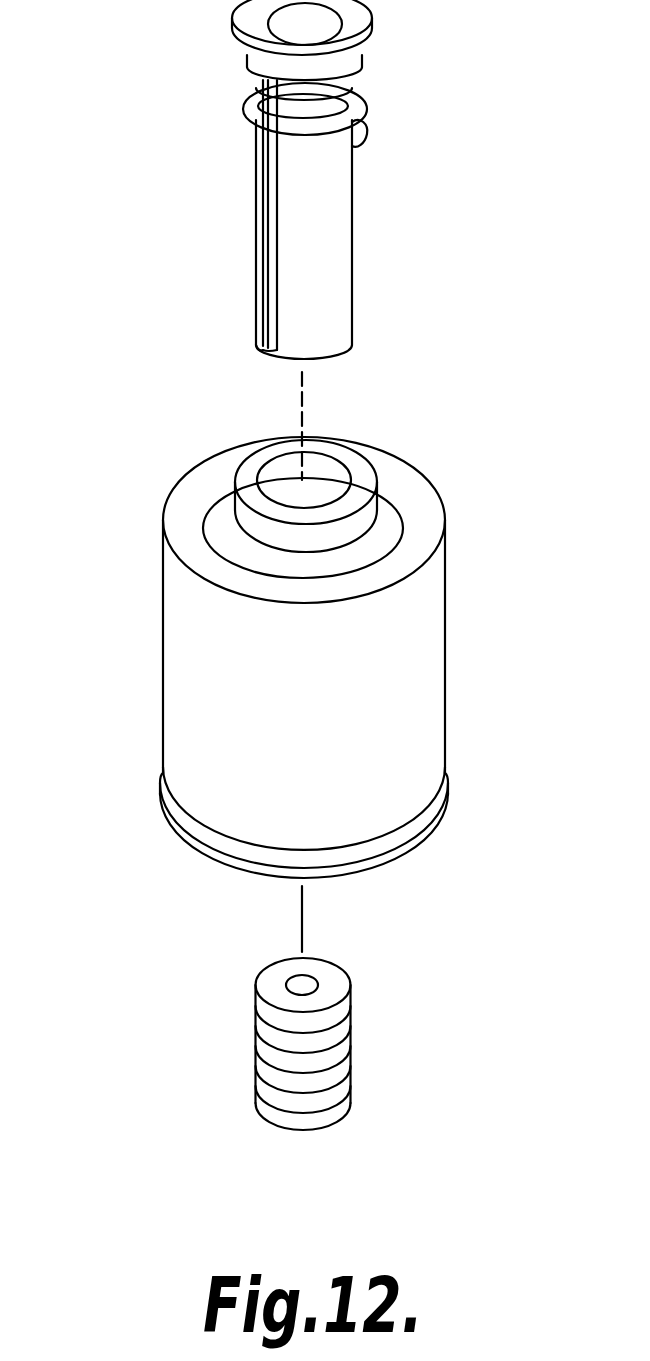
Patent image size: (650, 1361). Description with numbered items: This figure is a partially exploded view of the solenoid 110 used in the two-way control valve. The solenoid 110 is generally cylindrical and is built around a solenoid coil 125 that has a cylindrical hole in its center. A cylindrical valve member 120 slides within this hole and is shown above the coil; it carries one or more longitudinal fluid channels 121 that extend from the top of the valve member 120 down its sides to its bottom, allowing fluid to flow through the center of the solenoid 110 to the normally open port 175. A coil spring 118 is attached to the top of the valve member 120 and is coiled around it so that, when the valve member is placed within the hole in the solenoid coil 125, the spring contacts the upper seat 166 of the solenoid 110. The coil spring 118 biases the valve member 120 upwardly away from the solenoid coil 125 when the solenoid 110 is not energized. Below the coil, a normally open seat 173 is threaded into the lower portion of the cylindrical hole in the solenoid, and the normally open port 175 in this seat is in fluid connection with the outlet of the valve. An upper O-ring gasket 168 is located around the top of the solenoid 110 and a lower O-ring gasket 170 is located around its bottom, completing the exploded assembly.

The solenoid 110 is at (280, 643).
The coil spring 118 is at (368, 96).
The cylindrical valve member 120 is at (355, 233).
The longitudinal fluid channels 121 is at (268, 349).
The solenoid coil 125 is at (446, 660).
The upper seat 166 is at (340, 453).
The upper O-ring gasket 168 is at (403, 508).
The lower O-ring gasket 170 is at (448, 790).
The normally open seat 173 is at (350, 1083).
The normally open port 175 is at (287, 980).